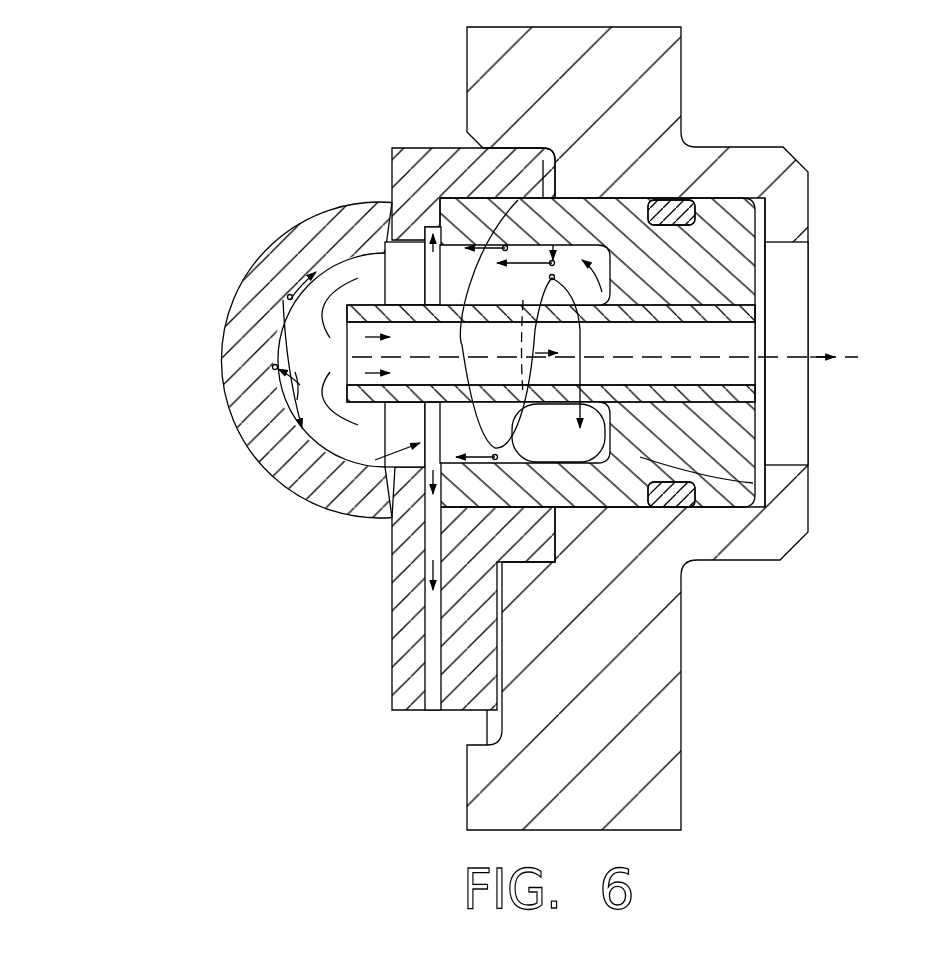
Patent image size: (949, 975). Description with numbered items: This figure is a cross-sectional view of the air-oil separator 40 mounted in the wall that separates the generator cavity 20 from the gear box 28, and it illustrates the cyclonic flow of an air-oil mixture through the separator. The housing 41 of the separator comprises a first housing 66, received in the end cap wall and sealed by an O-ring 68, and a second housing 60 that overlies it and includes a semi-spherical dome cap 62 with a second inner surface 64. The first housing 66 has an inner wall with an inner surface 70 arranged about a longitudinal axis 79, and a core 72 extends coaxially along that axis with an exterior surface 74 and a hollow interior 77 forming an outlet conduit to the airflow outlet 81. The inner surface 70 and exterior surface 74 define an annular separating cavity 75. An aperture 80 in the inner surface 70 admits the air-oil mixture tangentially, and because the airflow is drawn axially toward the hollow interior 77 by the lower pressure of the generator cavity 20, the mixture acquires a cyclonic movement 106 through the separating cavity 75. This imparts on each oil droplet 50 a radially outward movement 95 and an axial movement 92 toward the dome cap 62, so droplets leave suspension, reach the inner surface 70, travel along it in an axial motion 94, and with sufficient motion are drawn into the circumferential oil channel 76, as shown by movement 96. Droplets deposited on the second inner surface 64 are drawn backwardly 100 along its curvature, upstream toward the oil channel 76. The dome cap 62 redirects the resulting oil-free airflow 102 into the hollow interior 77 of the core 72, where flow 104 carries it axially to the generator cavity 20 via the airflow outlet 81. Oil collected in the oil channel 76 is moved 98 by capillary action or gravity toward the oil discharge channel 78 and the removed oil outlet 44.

The generator cavity 20 is at (882, 395).
The gear box 28 is at (47, 395).
The air-oil separator 40 is at (285, 166).
The housing 41 is at (183, 188).
The removed oil outlet 44 is at (428, 718).
The oil droplets 50 is at (288, 296).
The second housing 60 is at (432, 148).
The dome cap 62 is at (255, 322).
The second inner surface 64 is at (265, 445).
The first housing 66 is at (768, 222).
The O-ring 68 is at (681, 508).
The inner surface 70 is at (640, 290).
The core 72 is at (640, 355).
The exterior surface 74 is at (700, 319).
The separating cavity 75 is at (318, 245).
The oil channel 76 is at (330, 518).
The hollow interior 77 is at (305, 500).
The oil discharge channel 78 is at (418, 598).
The longitudinal axis 79 is at (848, 353).
The aperture 80 is at (594, 400).
The airflow outlet 81 is at (765, 349).
The axial movement 92 is at (522, 263).
The axial motion 94 is at (440, 200).
The radially outward movement 95 is at (578, 256).
The movement toward the oil channel 96 is at (352, 194).
The oil transfer movement 98 is at (430, 565).
The backward movement 100 is at (312, 275).
The oil-free airflow 102 is at (290, 350).
The axial flow 104 is at (352, 340).
The cyclonic movement 106 is at (753, 483).